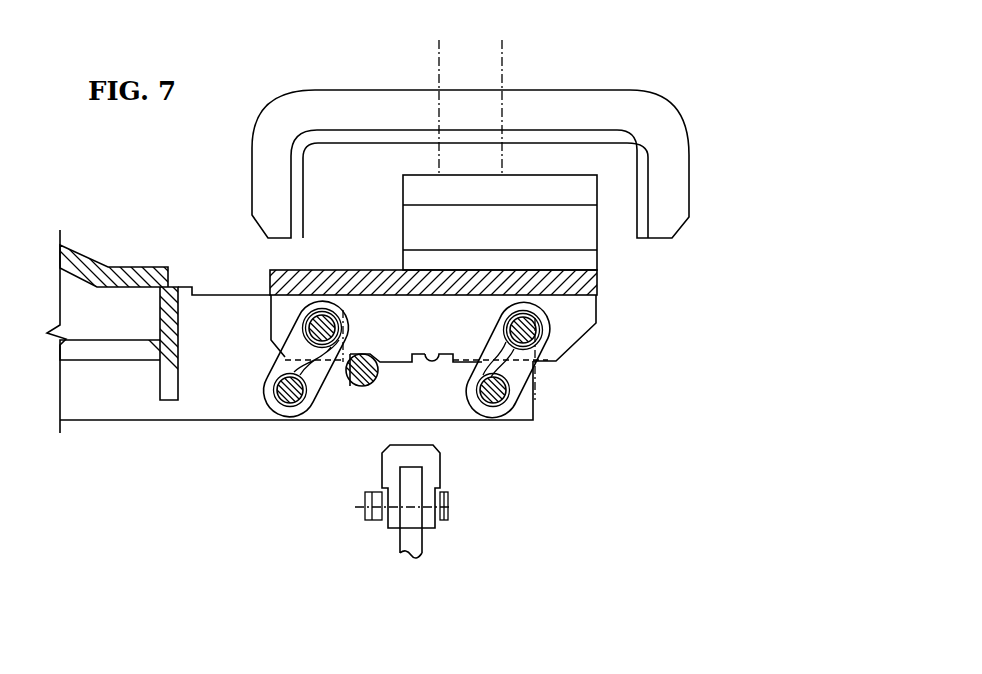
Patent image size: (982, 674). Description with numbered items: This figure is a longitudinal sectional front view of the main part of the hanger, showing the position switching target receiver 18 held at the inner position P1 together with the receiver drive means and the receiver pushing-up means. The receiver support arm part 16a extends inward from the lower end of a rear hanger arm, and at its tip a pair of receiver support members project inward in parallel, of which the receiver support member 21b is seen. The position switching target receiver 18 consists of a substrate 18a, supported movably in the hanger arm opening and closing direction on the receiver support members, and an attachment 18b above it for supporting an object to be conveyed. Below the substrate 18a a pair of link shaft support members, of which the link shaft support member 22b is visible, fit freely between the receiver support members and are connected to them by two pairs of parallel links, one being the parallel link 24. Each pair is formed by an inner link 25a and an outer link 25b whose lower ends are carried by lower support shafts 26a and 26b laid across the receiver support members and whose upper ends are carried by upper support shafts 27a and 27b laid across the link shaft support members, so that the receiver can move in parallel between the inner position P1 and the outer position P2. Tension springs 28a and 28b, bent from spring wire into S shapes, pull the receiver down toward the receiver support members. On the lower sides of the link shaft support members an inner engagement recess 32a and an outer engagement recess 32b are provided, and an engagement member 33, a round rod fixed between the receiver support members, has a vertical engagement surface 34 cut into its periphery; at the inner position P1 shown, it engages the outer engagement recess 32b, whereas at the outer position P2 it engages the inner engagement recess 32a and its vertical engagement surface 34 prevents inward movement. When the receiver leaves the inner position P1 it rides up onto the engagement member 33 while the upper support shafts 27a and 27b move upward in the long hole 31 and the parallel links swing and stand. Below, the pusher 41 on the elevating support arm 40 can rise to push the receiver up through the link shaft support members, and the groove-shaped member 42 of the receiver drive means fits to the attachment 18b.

The receiver support arm part 16a is at (88, 258).
The position switching target receiver 18 is at (580, 176).
The substrate 18a is at (597, 287).
The attachment for supporting an object to be conveyed 18b is at (585, 192).
The receiver support member 21b is at (448, 408).
The link shaft support member 22b is at (578, 311).
The parallel link 24 is at (296, 305).
The link 25a is at (262, 403).
The link 25b is at (508, 418).
The lower support shaft 26a is at (268, 380).
The lower support shaft 26b is at (508, 393).
The upper support shaft 27a is at (290, 317).
The upper support shaft 27b is at (537, 333).
The tension spring 28a is at (303, 322).
The tension spring 28b is at (530, 376).
The long hole 31 is at (343, 297).
The inner engagement recess 32a is at (443, 353).
The outer engagement recess 32b is at (345, 355).
The engagement member 33 is at (363, 388).
The vertical engagement surface 34 is at (346, 384).
The elevating support arm 40 is at (412, 545).
The pusher 41 is at (432, 458).
The groove-shaped member 42 is at (357, 137).
The inner position P1 is at (501, 95).
The outer position P2 is at (438, 95).